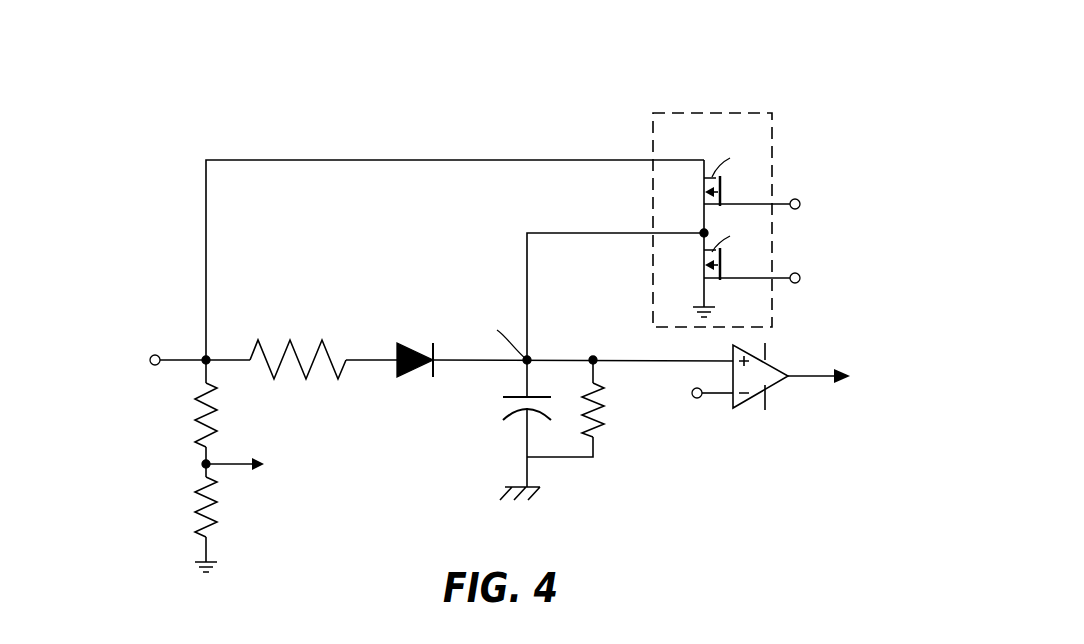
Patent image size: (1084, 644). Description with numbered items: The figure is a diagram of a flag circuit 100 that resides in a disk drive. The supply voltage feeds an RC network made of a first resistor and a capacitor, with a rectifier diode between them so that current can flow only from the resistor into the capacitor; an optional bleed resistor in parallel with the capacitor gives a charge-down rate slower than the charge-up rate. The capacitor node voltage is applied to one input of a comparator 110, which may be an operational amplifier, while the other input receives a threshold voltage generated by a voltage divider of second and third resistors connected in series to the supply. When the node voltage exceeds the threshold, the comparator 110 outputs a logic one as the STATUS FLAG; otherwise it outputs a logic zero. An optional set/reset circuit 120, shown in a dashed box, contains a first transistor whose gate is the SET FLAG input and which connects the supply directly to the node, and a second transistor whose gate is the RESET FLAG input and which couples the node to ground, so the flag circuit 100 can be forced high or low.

The flag circuit 100 is at (150, 228).
The comparator 110 is at (762, 378).
The set/reset circuit 120 is at (711, 113).